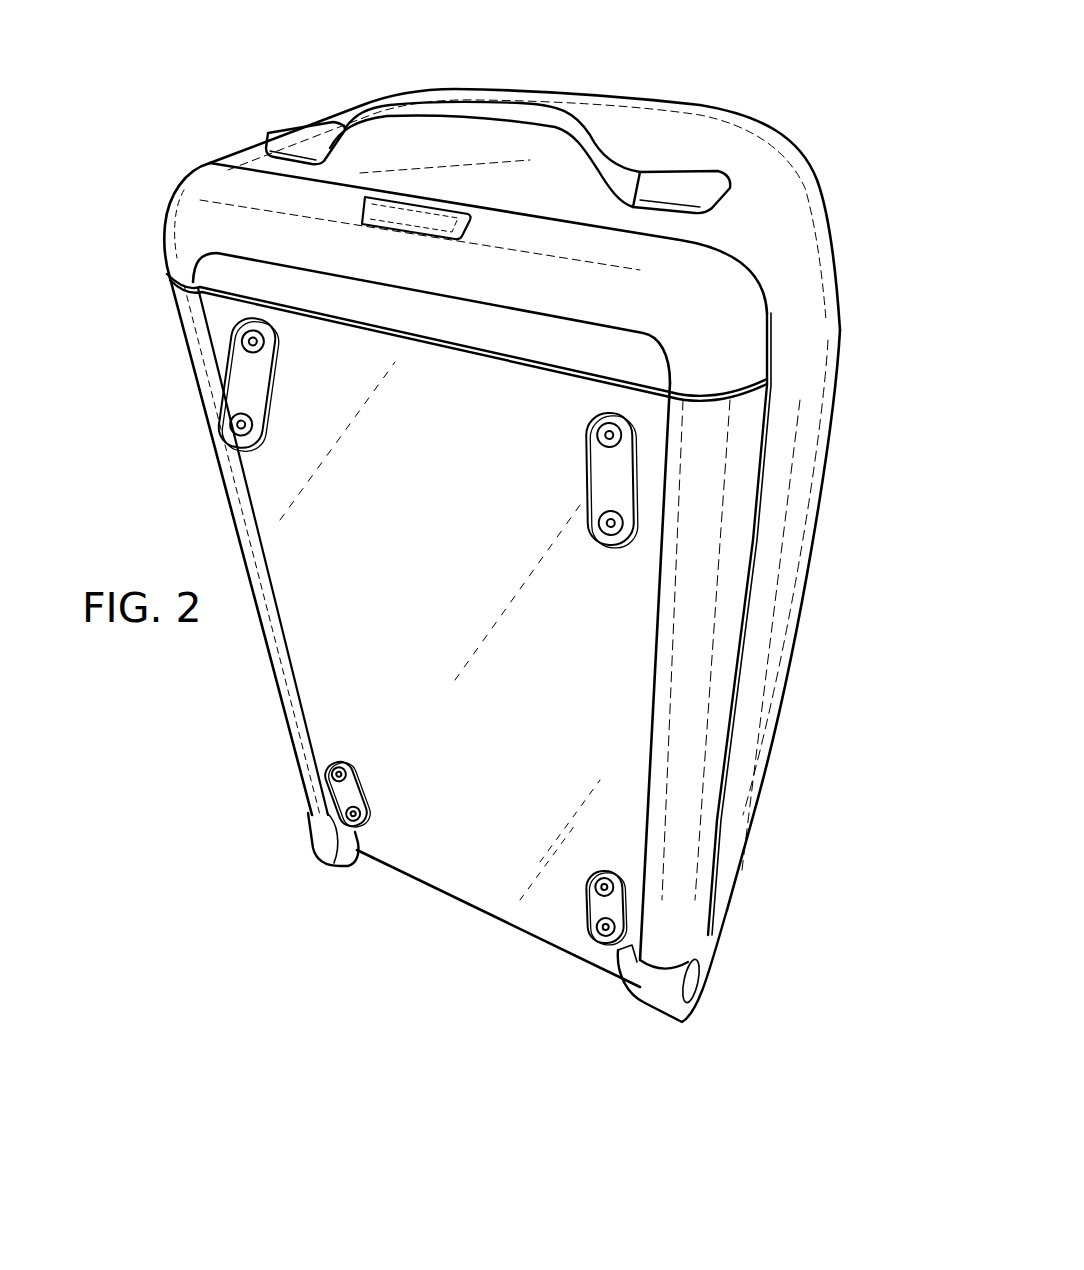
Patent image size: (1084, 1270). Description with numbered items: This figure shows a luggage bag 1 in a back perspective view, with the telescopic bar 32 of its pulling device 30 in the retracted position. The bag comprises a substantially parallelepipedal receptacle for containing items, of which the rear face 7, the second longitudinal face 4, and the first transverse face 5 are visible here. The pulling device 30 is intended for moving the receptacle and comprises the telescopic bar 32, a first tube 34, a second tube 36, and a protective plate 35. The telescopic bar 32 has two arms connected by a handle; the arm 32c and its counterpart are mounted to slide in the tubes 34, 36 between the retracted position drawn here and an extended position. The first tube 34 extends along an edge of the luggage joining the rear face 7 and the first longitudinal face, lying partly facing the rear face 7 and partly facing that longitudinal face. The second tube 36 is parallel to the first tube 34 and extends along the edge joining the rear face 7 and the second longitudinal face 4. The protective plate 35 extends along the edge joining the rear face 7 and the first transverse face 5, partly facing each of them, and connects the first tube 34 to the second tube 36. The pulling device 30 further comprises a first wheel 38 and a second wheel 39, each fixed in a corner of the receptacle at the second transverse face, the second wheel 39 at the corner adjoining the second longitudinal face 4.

The luggage bag 1 is at (176, 92).
The second longitudinal face 4 is at (742, 778).
The first transverse face 5 is at (682, 133).
The rear face 7 is at (467, 865).
The pulling device 30 is at (744, 852).
The telescopic bar 32 is at (778, 257).
The arm 32c is at (310, 233).
The first tube 34 is at (290, 690).
The protective plate 35 is at (237, 277).
The second tube 36 is at (690, 670).
The first wheel 38 is at (306, 893).
The second wheel 39 is at (711, 1044).